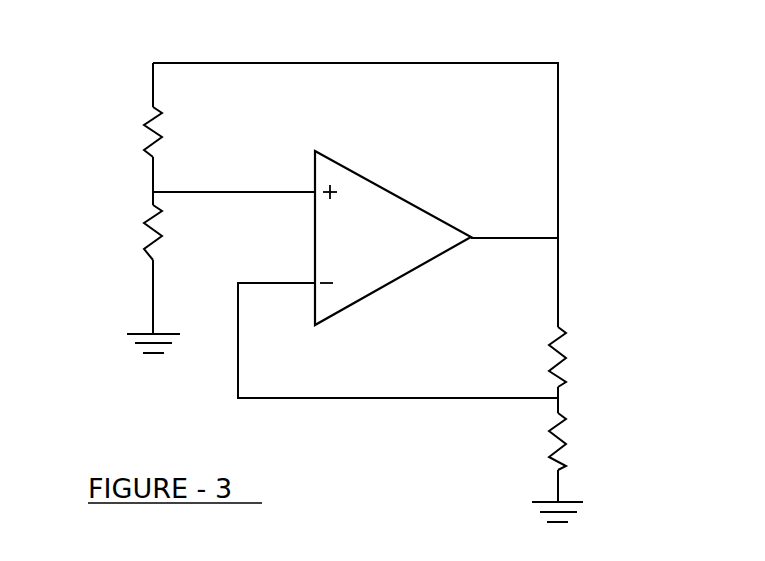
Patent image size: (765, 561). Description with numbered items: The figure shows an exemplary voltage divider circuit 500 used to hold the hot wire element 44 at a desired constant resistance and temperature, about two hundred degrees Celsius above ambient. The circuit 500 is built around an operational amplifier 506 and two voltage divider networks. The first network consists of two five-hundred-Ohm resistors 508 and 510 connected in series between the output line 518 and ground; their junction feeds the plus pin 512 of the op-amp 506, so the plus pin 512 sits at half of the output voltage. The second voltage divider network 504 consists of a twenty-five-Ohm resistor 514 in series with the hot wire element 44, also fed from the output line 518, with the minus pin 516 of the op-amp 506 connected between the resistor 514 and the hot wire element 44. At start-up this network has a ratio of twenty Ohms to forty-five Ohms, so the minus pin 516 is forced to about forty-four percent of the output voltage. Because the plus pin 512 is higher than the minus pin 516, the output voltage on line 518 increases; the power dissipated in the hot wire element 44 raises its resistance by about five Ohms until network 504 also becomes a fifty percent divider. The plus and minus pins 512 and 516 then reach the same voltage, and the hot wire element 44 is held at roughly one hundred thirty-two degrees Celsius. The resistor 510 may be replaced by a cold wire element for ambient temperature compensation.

The voltage divider circuit 500 is at (567, 52).
The voltage divider network 504 is at (530, 417).
The operational amplifier 506 is at (378, 216).
The 500 Ohm resistor 508 is at (165, 116).
The 500 Ohm resistor 510 is at (165, 247).
The plus pin 512 is at (314, 172).
The 25 Ohm resistor 514 is at (114, 146).
The minus pin 516 is at (292, 285).
The output line 518 is at (512, 240).
The hot wire element 44 is at (575, 457).